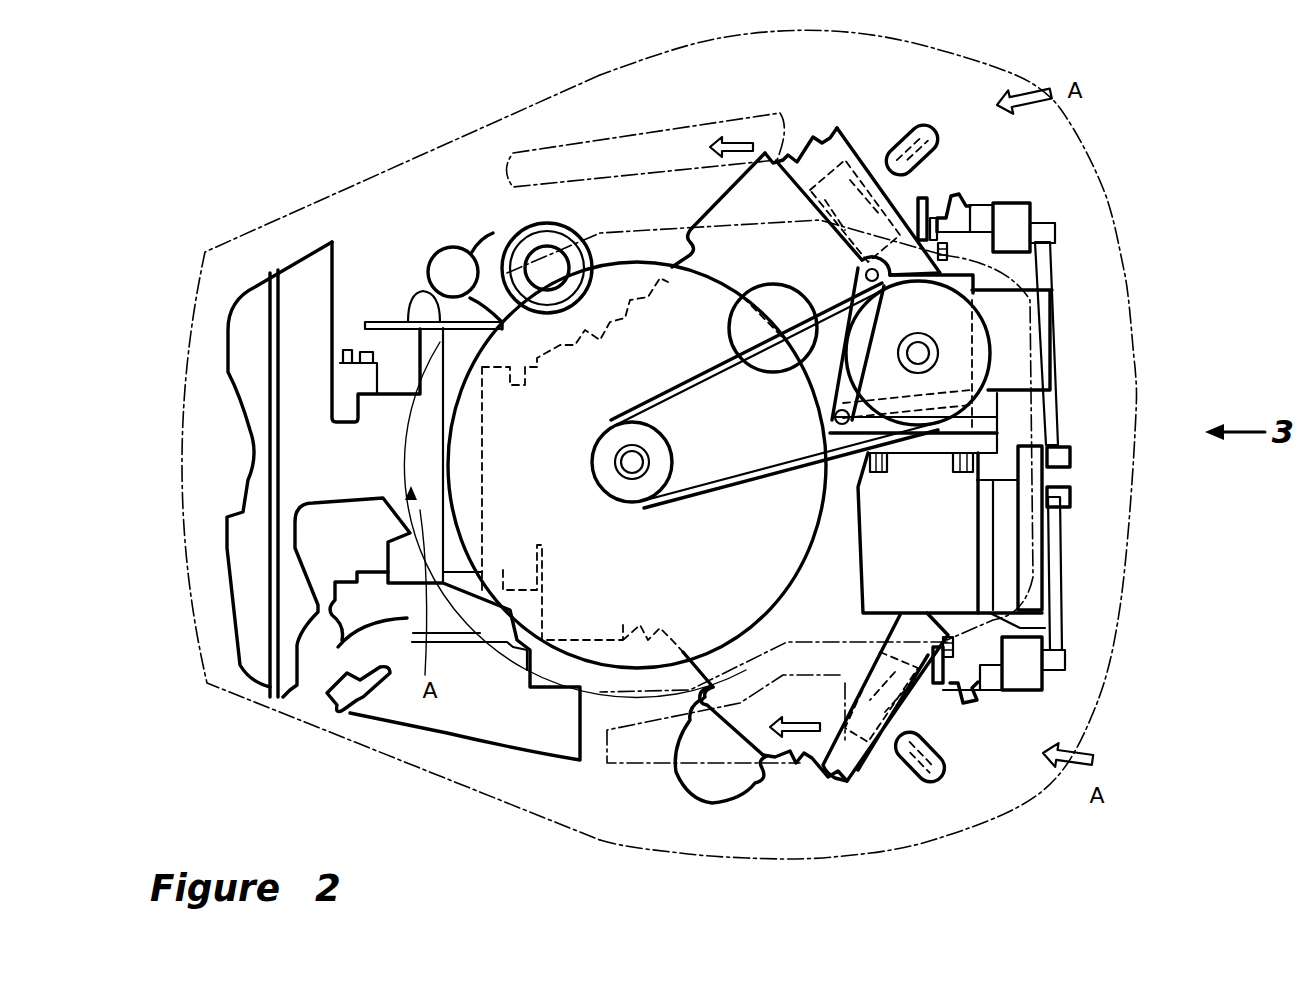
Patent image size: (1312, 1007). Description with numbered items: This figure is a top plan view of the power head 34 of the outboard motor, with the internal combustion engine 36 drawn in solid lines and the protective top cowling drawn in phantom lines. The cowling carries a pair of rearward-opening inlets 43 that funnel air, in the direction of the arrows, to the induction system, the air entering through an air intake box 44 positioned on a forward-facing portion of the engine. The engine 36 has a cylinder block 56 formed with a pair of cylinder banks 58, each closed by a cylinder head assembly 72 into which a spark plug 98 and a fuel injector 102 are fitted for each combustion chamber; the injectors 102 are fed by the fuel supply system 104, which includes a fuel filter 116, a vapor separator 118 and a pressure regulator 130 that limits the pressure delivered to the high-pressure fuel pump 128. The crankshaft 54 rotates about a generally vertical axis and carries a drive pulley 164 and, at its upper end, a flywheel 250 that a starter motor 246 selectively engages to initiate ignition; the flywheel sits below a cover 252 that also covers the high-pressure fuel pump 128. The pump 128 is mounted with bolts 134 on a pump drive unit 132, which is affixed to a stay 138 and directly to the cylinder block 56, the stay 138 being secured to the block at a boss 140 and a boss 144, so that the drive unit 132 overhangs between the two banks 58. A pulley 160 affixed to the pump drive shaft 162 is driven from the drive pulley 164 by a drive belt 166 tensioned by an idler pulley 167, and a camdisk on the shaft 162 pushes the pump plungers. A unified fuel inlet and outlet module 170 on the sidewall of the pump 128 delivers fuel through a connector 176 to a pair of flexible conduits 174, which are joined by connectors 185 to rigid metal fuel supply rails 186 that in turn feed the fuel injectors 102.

The power head 34 is at (1123, 283).
The internal combustion engine 36 is at (962, 743).
The inlets 43 is at (700, 128).
The air intake box 44 is at (242, 397).
The crankshaft 54 is at (605, 463).
The cylinder block 56 is at (708, 197).
The cylinder banks 58 is at (763, 200).
The cylinder head assembly 72 is at (804, 157).
The spark plug 98 is at (877, 167).
The fuel injector 102 is at (971, 188).
The fuel supply system 104 is at (1113, 350).
The fuel filter 116 is at (680, 790).
The vapor separator 118 is at (420, 735).
The high-pressure fuel pump 128 is at (880, 600).
The pressure regulator 130 is at (1013, 345).
The pump drive unit 132 is at (867, 297).
The bolts 134 is at (877, 470).
The stay 138 is at (868, 405).
The boss 140 is at (840, 440).
The boss 144 is at (860, 272).
The pulley 160 is at (847, 372).
The pump drive shaft 162 is at (922, 356).
The drive pulley 164 is at (625, 493).
The drive belt 166 is at (710, 492).
The idler pulley 167 is at (735, 332).
The fuel inlet and outlet module 170 is at (1017, 577).
The flexible conduits 174 is at (1065, 410).
The connector 176 is at (1068, 497).
The connectors 185 is at (1057, 232).
The fuel supply rails 186 is at (1032, 207).
The starter motor 246 is at (510, 220).
The flywheel 250 is at (460, 397).
The cover 252 is at (551, 684).